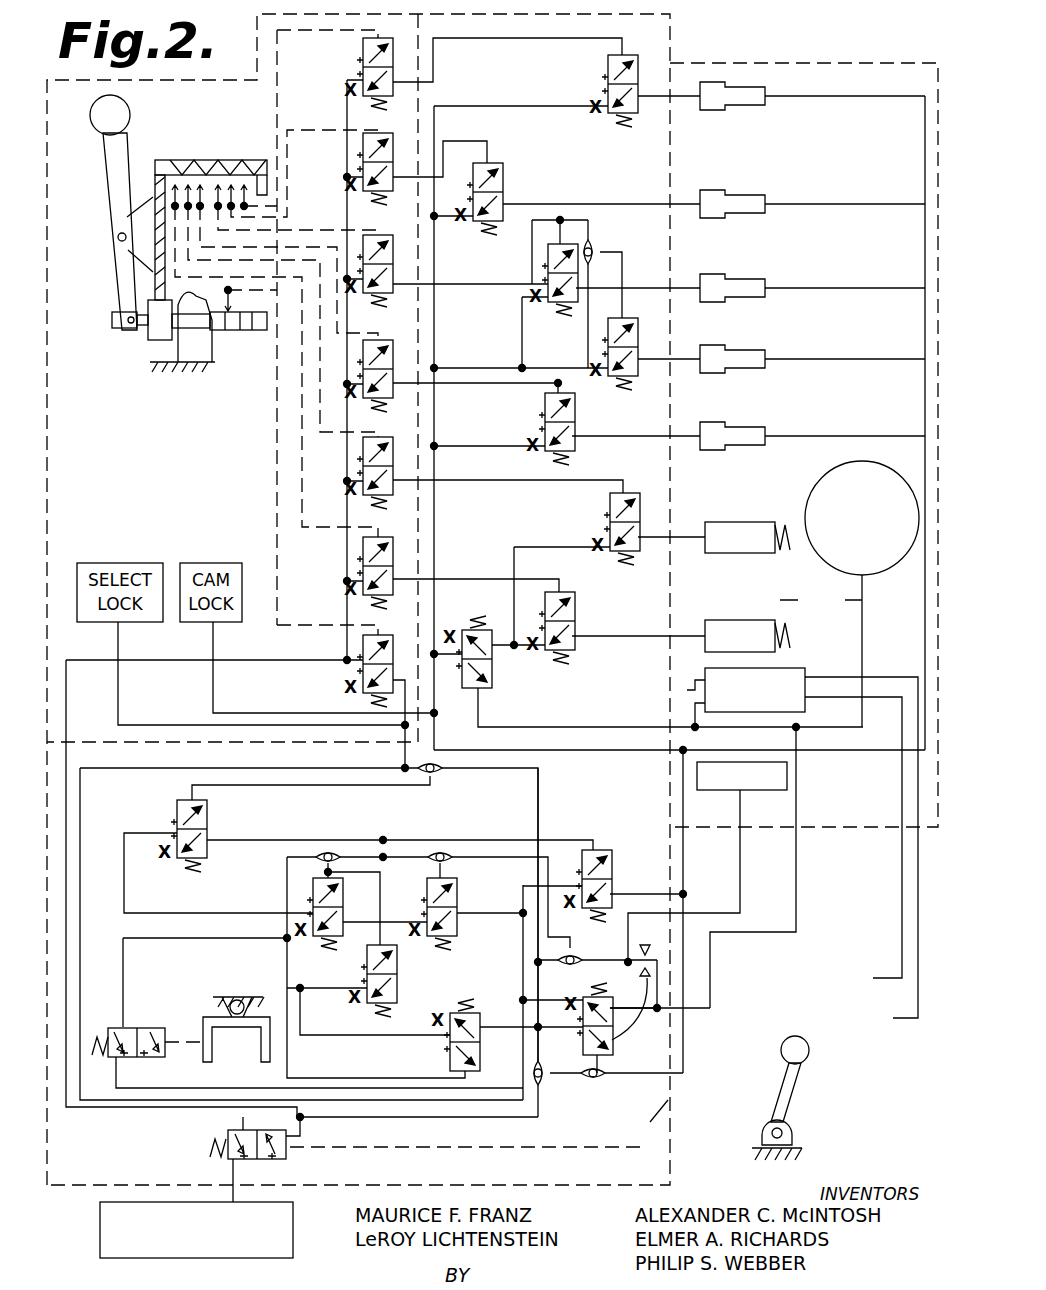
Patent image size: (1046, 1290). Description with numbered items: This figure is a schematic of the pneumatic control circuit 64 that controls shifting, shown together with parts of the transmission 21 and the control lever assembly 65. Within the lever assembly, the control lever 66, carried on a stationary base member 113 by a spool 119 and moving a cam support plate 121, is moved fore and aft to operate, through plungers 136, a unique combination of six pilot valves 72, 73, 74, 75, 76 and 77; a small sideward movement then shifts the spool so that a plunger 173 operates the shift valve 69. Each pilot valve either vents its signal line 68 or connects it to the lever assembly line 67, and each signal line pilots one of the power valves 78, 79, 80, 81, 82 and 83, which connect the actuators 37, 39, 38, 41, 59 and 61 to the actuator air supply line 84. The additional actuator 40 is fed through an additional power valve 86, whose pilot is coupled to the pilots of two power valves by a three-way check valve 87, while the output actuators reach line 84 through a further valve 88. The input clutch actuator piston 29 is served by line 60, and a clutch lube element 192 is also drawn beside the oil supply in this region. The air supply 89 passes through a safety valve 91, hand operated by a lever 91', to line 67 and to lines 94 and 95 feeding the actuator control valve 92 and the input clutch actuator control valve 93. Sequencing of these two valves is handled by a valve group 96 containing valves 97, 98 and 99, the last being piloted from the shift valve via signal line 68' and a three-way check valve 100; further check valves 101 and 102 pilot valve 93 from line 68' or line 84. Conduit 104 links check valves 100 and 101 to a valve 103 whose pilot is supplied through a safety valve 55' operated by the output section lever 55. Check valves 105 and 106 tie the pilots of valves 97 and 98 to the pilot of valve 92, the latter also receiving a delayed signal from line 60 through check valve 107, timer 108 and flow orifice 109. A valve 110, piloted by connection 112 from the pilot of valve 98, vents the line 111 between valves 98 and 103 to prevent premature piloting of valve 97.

The transmission 21 is at (730, 63).
The input clutch actuator piston 29 is at (823, 483).
The actuator 37 is at (745, 108).
The actuator 38 is at (745, 280).
The actuator 39 is at (745, 196).
The actuator 40 is at (740, 350).
The actuator 41 is at (740, 425).
The lever 55 is at (148, 1059).
The safety valve 55' is at (194, 1023).
The output actuator 59 is at (740, 522).
The input clutch actuator line 60 is at (784, 596).
The output actuator 61 is at (705, 640).
The control circuit 64 is at (687, 1120).
The control lever assembly 65 is at (47, 532).
The control lever 66 is at (108, 170).
The shift lever assembly line 67 is at (230, 660).
The signal line 68 is at (278, 378).
The signal line 68' is at (368, 752).
The shift valve 69 is at (363, 648).
The pilot valve 72 is at (354, 52).
The pilot valve 73 is at (363, 153).
The pilot valve 74 is at (363, 245).
The pilot valve 75 is at (395, 360).
The pilot valve 76 is at (363, 452).
The pilot valve 77 is at (363, 550).
The power valve 78 is at (608, 62).
The power valve 79 is at (503, 170).
The power valve 80 is at (548, 272).
The power valve 81 is at (545, 404).
The power valve 82 is at (610, 504).
The power valve 83 is at (572, 612).
The actuator air supply line 84 is at (560, 752).
The additional power valve 86 is at (608, 337).
The three-way check valve 87 is at (594, 250).
The valve 88 is at (492, 683).
The air supply 89 is at (265, 1258).
The safety valve 91 is at (236, 1153).
The lever 91' is at (806, 1098).
The actuator control valve 92 is at (598, 852).
The input clutch actuator control valve 93 is at (610, 1050).
The line 94 is at (523, 955).
The line 95 is at (523, 1000).
The valve group 96 is at (275, 955).
The two-position valve 97 is at (455, 892).
The valve 98 is at (313, 897).
The valve 99 is at (207, 815).
The three-way check valve 100 is at (443, 773).
The three-way check valve 101 is at (542, 1087).
The three-way check valve 102 is at (595, 1082).
The two-position valve 103 is at (450, 1057).
The conduit 104 is at (538, 815).
The three-way check valve 105 is at (328, 848).
The three-way check valve 106 is at (440, 850).
The three-way check valve 107 is at (572, 955).
The timer 108 is at (787, 777).
The flow orifice 109 is at (647, 997).
The valve 110 is at (367, 968).
The line 111 is at (360, 1035).
The connection 112 is at (350, 868).
The stationary base member 113 is at (200, 368).
The spool 119 is at (118, 330).
The cam support plate 121 is at (155, 165).
The plunger 136 is at (210, 178).
The plunger 173 is at (210, 322).
The clutch lube valve 192 is at (785, 670).